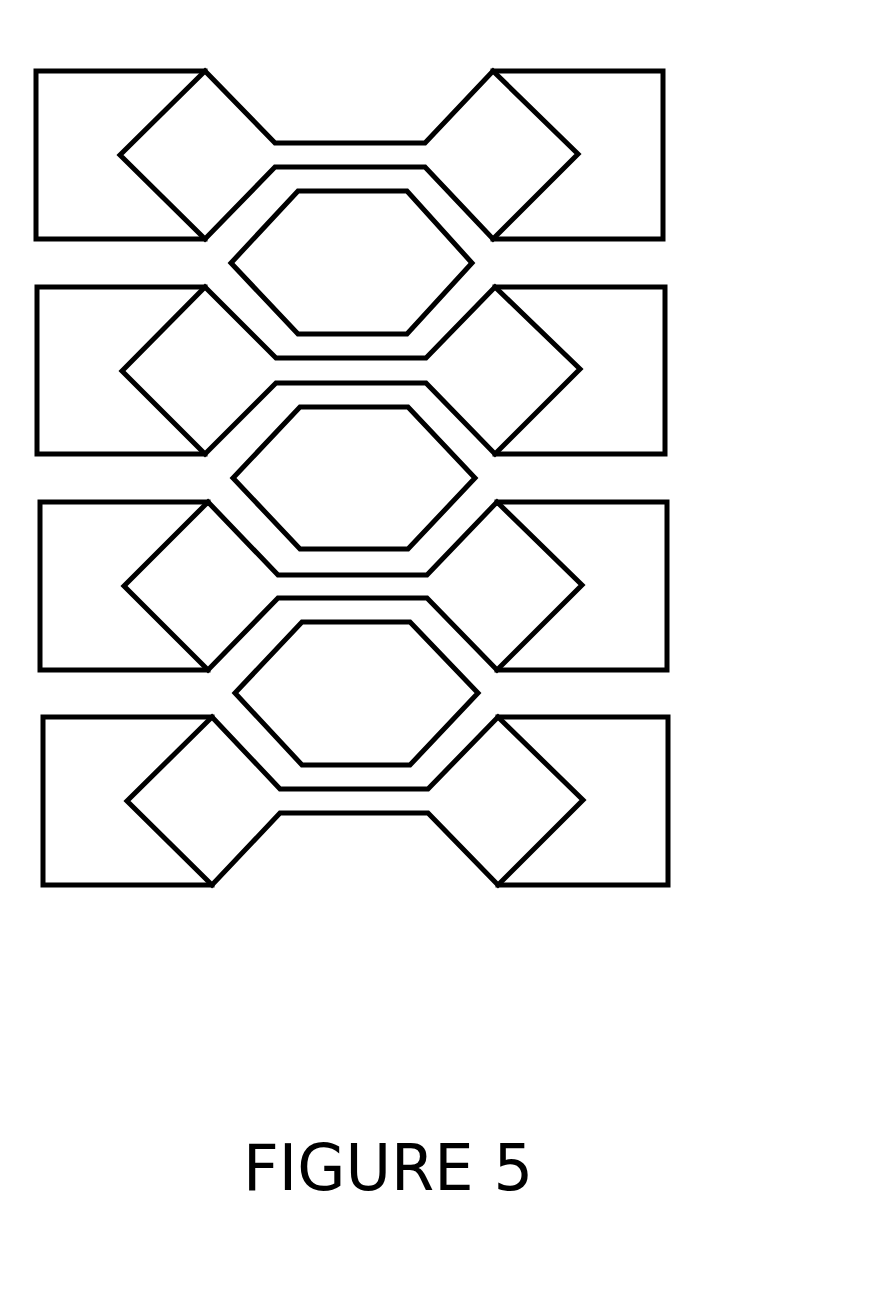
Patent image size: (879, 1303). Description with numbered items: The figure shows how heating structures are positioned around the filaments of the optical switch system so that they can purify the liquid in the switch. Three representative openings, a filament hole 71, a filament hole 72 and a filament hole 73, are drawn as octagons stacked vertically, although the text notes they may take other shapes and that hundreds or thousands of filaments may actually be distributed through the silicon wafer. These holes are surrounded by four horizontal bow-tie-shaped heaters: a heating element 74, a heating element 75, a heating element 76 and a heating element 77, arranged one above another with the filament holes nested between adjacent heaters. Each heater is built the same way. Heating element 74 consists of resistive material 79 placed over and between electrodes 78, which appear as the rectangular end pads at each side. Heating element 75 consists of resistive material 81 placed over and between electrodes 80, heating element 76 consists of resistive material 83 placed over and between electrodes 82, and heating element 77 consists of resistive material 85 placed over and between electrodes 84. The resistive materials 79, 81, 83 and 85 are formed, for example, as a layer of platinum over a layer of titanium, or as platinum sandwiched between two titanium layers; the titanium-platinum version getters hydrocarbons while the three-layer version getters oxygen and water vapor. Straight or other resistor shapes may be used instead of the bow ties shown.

The filament hole 71 is at (351, 262).
The filament hole 72 is at (354, 478).
The filament hole 73 is at (356, 693).
The heating element 74 is at (393, 155).
The heating element 75 is at (395, 370).
The heating element 76 is at (397, 586).
The heating element 77 is at (400, 801).
The electrodes 78 is at (349, 155).
The resistive material 79 is at (349, 155).
The electrodes 80 is at (351, 370).
The resistive material 81 is at (351, 370).
The electrodes 82 is at (353, 586).
The resistive material 83 is at (353, 586).
The electrodes 84 is at (355, 801).
The resistive material 85 is at (355, 801).